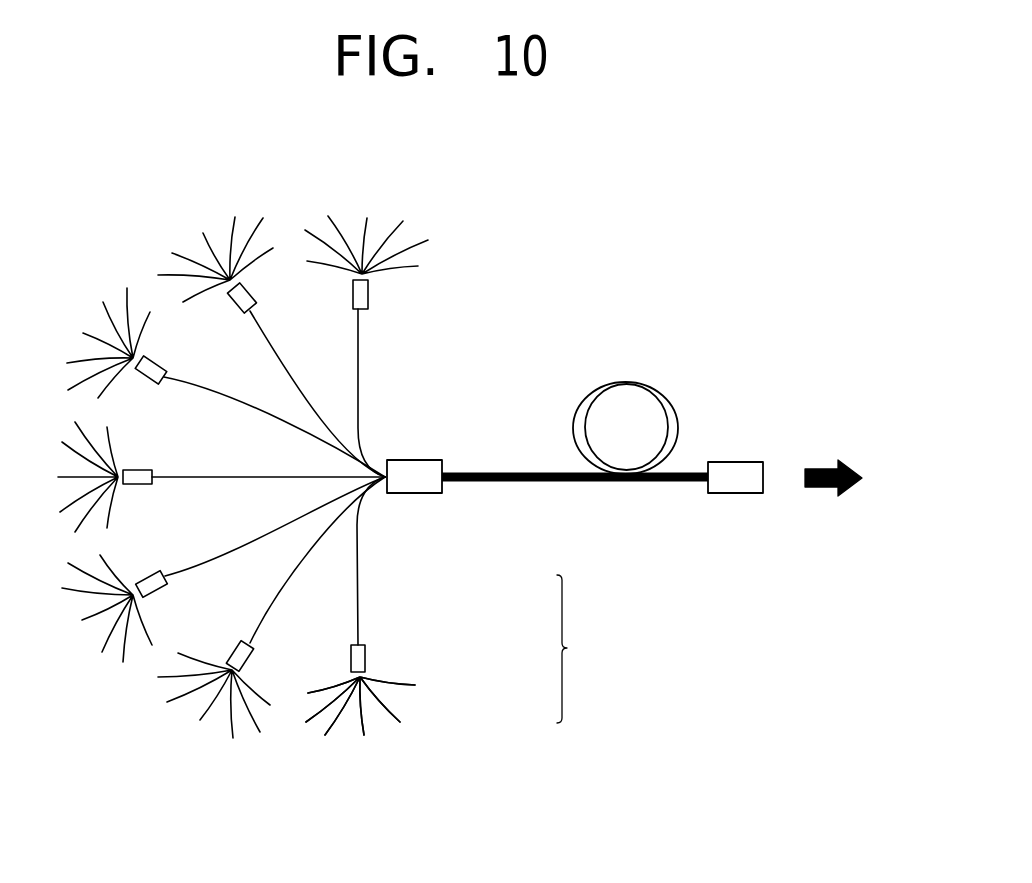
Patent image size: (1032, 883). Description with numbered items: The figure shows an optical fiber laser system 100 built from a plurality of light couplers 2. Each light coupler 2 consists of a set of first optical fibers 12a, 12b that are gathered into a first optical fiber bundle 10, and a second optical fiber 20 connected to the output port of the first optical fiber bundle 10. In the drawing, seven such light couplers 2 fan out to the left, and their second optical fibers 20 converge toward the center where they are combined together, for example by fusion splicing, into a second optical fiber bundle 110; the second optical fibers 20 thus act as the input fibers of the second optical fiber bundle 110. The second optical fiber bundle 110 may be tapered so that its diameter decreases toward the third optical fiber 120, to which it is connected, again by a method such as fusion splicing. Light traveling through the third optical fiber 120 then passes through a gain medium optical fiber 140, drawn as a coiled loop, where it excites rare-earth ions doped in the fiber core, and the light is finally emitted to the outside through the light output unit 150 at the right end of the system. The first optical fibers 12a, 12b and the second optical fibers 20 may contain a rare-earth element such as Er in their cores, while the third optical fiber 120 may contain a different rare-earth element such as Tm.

The optical fiber laser system 100 is at (480, 477).
The second optical fiber bundle 110 is at (416, 460).
The third optical fiber 120 is at (507, 473).
The gain medium optical fiber 140 is at (631, 382).
The light output unit 150 is at (735, 462).
The light coupler 2 is at (447, 606).
The second optical fiber 20 is at (357, 590).
The first optical fiber bundle 10 is at (367, 658).
The first optical fiber 12a is at (402, 723).
The first optical fiber 12b is at (448, 722).